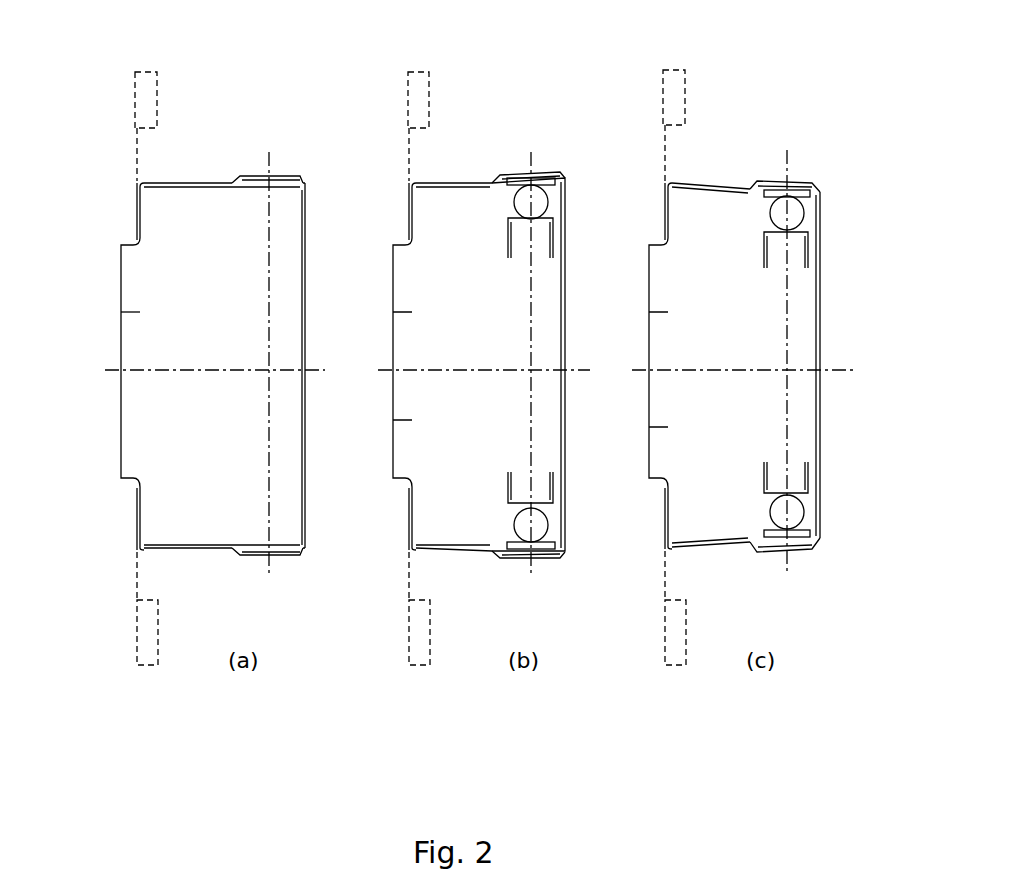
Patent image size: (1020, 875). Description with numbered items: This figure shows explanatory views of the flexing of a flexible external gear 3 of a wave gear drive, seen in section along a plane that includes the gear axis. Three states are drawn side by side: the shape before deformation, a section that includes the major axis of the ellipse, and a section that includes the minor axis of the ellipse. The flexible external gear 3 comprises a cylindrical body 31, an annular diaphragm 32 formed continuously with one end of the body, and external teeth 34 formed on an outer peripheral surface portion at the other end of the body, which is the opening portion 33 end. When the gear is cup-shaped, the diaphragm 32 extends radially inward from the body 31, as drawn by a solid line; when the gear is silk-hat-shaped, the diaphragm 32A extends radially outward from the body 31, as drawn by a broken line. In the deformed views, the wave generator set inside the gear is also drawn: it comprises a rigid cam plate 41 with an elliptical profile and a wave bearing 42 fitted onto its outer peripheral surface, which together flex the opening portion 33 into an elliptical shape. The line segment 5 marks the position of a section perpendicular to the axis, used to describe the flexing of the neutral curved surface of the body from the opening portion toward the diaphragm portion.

The flexible external gear 3 is at (194, 340).
The cylindrical body 31 is at (210, 188).
The annular diaphragm 32 is at (137, 212).
The diaphragm 32A is at (137, 92).
The opening portion 33 is at (307, 213).
The external teeth 34 is at (257, 177).
The line segment 5 is at (268, 562).
The rigid cam plate 41 is at (545, 243).
The wave bearing 42 is at (548, 204).